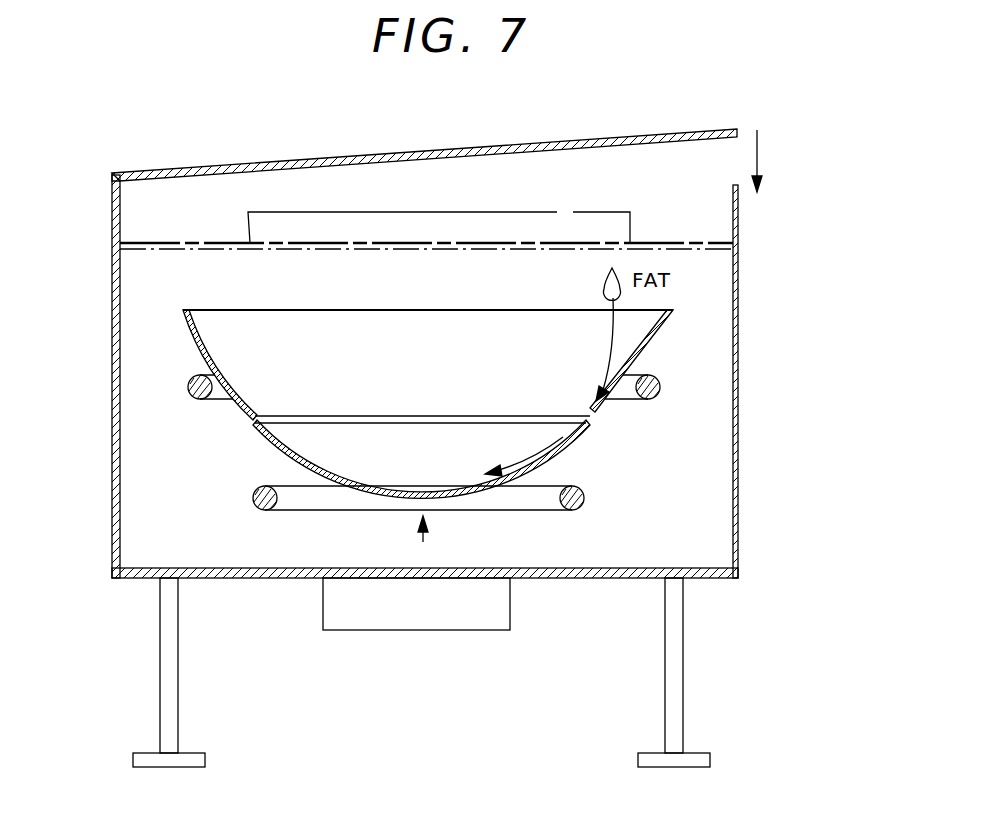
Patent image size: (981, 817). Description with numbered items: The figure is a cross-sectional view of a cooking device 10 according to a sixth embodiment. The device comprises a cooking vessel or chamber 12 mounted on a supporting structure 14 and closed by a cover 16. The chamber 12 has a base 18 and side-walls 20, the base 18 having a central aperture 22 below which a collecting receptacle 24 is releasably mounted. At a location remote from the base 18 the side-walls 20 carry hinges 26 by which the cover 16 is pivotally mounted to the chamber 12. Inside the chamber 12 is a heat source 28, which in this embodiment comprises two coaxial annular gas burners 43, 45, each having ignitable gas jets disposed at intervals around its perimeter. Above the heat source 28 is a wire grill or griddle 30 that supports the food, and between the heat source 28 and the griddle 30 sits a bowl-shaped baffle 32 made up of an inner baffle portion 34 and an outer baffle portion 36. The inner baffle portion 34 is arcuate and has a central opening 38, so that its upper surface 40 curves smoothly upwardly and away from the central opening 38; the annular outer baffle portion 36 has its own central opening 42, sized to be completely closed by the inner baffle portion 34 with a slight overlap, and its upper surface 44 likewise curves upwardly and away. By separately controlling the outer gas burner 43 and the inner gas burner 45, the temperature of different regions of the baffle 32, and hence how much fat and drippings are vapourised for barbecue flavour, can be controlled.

The cooking device 10 is at (786, 316).
The cooking vessel or chamber 12 is at (738, 463).
The supporting structure 14 is at (672, 676).
The cover 16 is at (333, 108).
The base 18 is at (622, 579).
The side-walls 20 is at (112, 468).
The central aperture 22 is at (377, 549).
The collecting receptacle 24 is at (439, 632).
The hinges 26 is at (116, 172).
The heat source 28 is at (621, 416).
The wire grill, griddle or other cooking device 30 is at (700, 242).
The baffle 32 is at (488, 404).
The inner baffle portion 34 is at (586, 434).
The outer baffle portion 36 is at (670, 328).
The central opening 38 is at (381, 490).
The upper surface 40 is at (343, 441).
The central opening 42 is at (266, 417).
The outer gas burner 43 is at (662, 387).
The upper surface 44 is at (218, 372).
The inner gas burner 45 is at (568, 512).